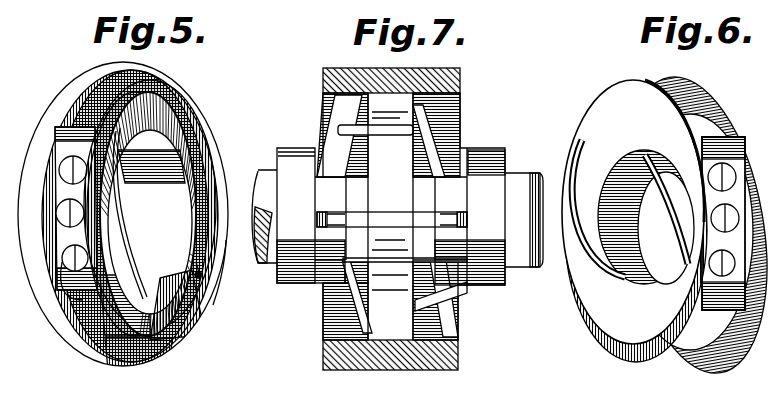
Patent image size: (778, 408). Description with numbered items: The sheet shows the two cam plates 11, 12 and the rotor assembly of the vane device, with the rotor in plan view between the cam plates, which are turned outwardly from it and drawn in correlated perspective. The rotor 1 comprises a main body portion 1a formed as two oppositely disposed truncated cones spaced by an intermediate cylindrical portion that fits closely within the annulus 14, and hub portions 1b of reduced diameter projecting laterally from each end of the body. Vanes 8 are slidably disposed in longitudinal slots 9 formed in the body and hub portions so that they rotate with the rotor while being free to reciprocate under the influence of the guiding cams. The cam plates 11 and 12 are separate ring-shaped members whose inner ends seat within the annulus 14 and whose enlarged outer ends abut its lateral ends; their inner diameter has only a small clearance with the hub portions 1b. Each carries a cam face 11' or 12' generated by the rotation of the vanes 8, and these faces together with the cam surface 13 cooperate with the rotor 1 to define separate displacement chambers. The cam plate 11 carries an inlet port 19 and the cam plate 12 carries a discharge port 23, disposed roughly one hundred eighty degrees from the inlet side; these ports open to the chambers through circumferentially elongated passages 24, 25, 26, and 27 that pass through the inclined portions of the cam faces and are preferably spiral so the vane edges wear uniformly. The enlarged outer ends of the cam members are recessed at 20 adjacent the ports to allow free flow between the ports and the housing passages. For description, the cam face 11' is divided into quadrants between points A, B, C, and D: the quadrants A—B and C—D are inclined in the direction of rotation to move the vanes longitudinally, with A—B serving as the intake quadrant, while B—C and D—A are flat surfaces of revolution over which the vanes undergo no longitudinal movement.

In FIG. 5, the cam plate 11 is at (123, 214).
In FIG. 5, the cam face 11' is at (234, 275).
In FIG. 5, the circumferentially elongated passage 26 is at (200, 205).
In FIG. 5, the circumferentially elongated passage 24 is at (130, 260).
In FIG. 5, the quadrant point A is at (153, 268).
In FIG. 5, the quadrant point B is at (117, 153).
In FIG. 5, the inlet port 19 is at (77, 247).
In FIG. 5, the quadrant point C is at (195, 142).
In FIG. 5, the quadrant point D is at (204, 279).
In FIG. 5, the recess 20 is at (67, 295).
In FIG. 6, the recess 20 is at (722, 276).
In FIG. 7, the annulus 14 is at (460, 83).
In FIG. 7, the guiding and sealing cam surface 13 is at (460, 102).
In FIG. 7, the rotor 1 is at (433, 172).
In FIG. 7, the main body portion 1a is at (357, 204).
In FIG. 7, the hub portion 1b is at (391, 218).
In FIG. 7, the longitudinal slot 9 is at (463, 213).
In FIG. 7, the vane 8 is at (392, 261).
In FIG. 6, the cam plate 12 is at (634, 221).
In FIG. 6, the cam face 12' is at (690, 224).
In FIG. 6, the circumferentially elongated passage 27 is at (663, 175).
In FIG. 6, the discharge port 23 is at (712, 217).
In FIG. 6, the circumferentially elongated passage 25 is at (620, 272).